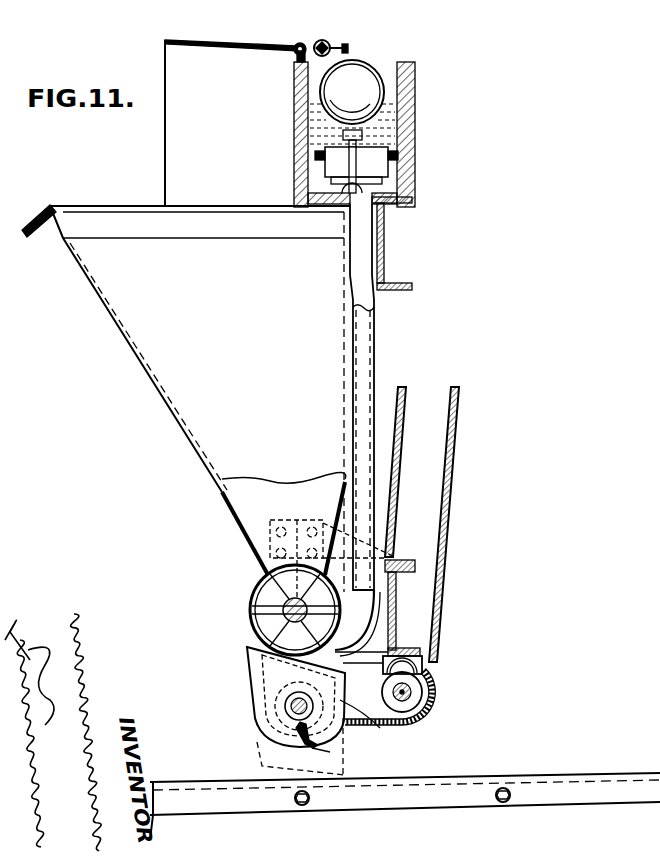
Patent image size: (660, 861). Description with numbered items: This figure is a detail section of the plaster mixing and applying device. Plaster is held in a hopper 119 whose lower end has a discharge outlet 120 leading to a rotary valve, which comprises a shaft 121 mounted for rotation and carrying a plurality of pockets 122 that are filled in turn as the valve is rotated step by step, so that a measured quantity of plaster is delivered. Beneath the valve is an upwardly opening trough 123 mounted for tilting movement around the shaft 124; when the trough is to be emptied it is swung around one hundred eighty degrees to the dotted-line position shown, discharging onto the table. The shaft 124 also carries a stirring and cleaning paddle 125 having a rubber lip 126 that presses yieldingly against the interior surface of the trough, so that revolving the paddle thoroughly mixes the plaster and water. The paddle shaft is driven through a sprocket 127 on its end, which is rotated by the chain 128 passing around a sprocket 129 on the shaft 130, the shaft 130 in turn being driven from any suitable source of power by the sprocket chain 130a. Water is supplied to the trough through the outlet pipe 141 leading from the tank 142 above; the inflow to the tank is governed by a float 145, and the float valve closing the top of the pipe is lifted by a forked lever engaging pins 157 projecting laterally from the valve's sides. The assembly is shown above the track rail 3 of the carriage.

The rail 3 is at (605, 812).
The hopper 119 is at (170, 412).
The discharge outlet 120 is at (270, 540).
The shaft 121 is at (250, 602).
The pockets 122 is at (262, 584).
The trough 123 is at (252, 665).
The shaft 124 is at (286, 706).
The stirring and cleaning paddle 125 is at (296, 734).
The rubber lip 126 is at (318, 752).
The sprocket 127 is at (380, 728).
The chain 128 is at (385, 737).
The sprocket 129 is at (430, 700).
The shaft 130 is at (404, 690).
The sprocket chain 130a is at (445, 548).
The outlet pipe 141 is at (374, 366).
The tank 142 is at (415, 126).
The float 145 is at (362, 88).
The pins 157 is at (398, 158).